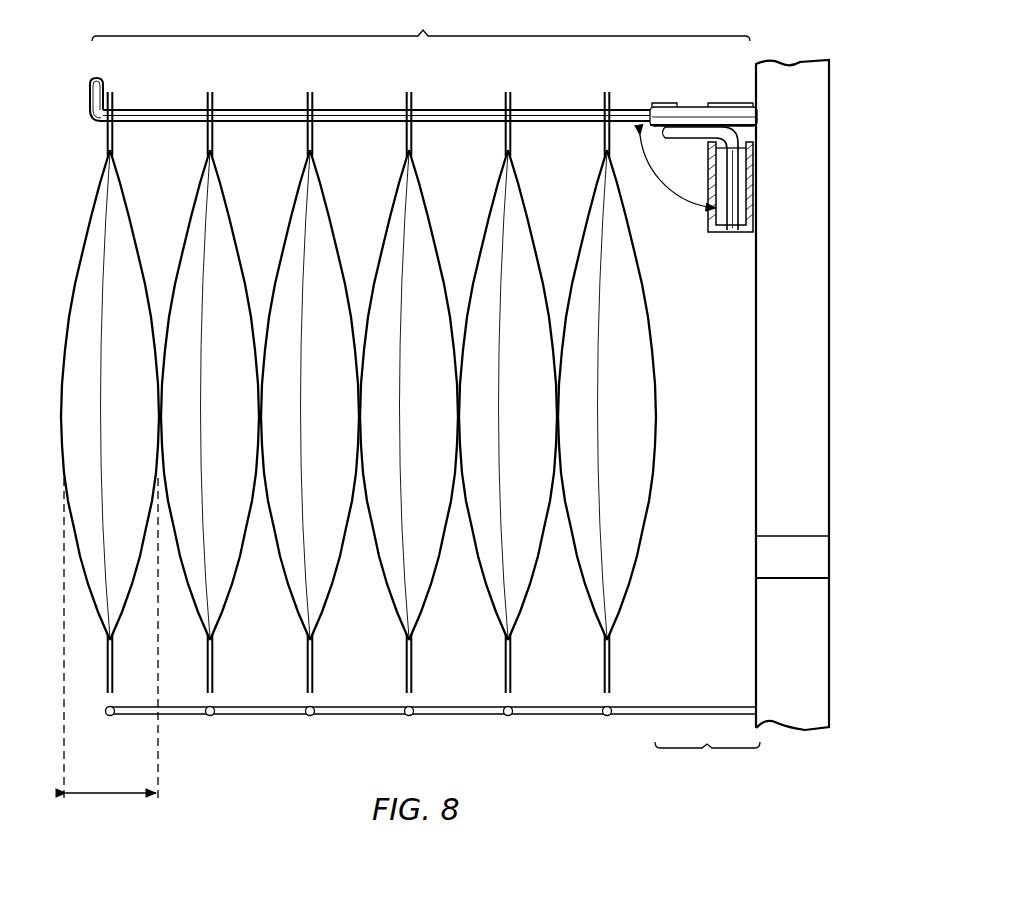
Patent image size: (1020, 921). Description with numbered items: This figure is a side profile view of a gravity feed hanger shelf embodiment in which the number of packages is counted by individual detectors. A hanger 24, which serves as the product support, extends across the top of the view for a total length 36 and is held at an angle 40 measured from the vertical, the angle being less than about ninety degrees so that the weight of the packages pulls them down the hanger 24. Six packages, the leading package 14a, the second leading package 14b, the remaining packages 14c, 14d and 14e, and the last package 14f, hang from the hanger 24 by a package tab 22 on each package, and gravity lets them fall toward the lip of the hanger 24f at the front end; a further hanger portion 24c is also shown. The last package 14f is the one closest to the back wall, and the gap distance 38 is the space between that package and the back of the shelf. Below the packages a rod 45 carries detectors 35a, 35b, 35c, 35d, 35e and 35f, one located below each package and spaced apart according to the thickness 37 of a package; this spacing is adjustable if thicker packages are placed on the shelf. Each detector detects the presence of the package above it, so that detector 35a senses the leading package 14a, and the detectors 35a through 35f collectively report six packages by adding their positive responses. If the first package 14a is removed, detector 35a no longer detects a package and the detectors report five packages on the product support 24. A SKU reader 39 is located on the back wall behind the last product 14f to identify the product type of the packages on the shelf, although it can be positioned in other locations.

The leading package 14a is at (110, 392).
The second leading package 14b is at (211, 384).
The package 14c is at (310, 392).
The package 14d is at (409, 392).
The package 14e is at (508, 392).
The last package 14f is at (607, 392).
The package tab 22 is at (235, 384).
The hanger 24 is at (359, 106).
The rod end bracket 24c is at (460, 109).
The lip of the hanger 24f is at (90, 93).
The total length of the hanger 36 is at (421, 22).
The thickness of the package 37 is at (111, 795).
The gap distance 38 is at (707, 763).
The SKU reader 39 is at (817, 558).
The angle 40 is at (676, 196).
The rod 45 is at (557, 717).
The detector 35a is at (110, 716).
The detector 35b is at (210, 716).
The detector 35c is at (310, 716).
The detector 35d is at (409, 716).
The detector 35e is at (508, 716).
The detector 35f is at (607, 716).